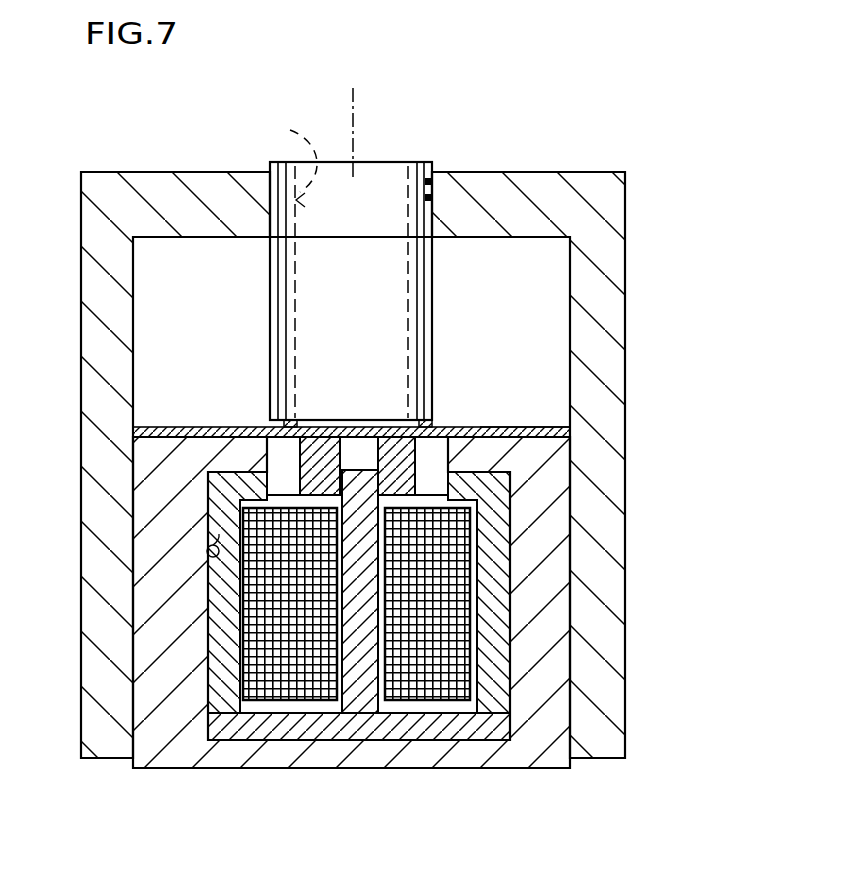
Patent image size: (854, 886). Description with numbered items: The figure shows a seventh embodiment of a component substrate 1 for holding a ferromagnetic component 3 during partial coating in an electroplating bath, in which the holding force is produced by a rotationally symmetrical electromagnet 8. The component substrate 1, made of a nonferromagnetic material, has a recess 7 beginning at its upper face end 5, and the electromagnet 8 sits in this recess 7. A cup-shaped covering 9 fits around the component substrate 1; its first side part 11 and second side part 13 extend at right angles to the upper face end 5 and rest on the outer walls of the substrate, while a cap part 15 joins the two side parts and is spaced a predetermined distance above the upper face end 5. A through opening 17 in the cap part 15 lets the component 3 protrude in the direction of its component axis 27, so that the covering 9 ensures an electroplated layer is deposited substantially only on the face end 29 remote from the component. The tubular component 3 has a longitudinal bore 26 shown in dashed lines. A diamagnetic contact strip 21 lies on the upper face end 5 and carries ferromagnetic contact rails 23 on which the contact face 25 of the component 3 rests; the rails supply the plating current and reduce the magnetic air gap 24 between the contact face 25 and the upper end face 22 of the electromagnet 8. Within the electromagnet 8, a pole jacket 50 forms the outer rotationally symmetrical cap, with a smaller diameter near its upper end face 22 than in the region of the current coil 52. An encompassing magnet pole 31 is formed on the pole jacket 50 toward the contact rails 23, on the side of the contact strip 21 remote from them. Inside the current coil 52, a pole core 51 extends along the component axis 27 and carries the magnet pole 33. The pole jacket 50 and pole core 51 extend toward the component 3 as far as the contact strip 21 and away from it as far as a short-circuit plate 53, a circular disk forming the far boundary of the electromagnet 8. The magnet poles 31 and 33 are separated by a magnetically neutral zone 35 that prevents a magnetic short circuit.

The component substrate 1 is at (133, 655).
The component 3 is at (365, 263).
The upper face end 5 is at (493, 432).
The recess 7 is at (207, 563).
The electromagnet 8 is at (286, 742).
The covering 9 is at (627, 295).
The first side part 11 is at (102, 600).
The second side part 13 is at (604, 618).
The cap part 15 is at (512, 190).
The through opening 17 is at (433, 172).
The contact strip 21 is at (190, 427).
The upper end face 22 is at (448, 455).
The contact rail 23 is at (418, 418).
The magnetic air gap 24 is at (245, 465).
The contact face 25 is at (330, 420).
The longitudinal bore 26 is at (287, 157).
The component axis 27 is at (353, 143).
The face end 29 is at (378, 161).
The magnet pole 31 is at (286, 476).
The magnet pole 33 is at (354, 482).
The magnetically neutral zone 35 is at (397, 498).
The pole jacket 50 is at (493, 657).
The pole core 51 is at (362, 590).
The current coil 52 is at (440, 679).
The short-circuit plate 53 is at (495, 735).